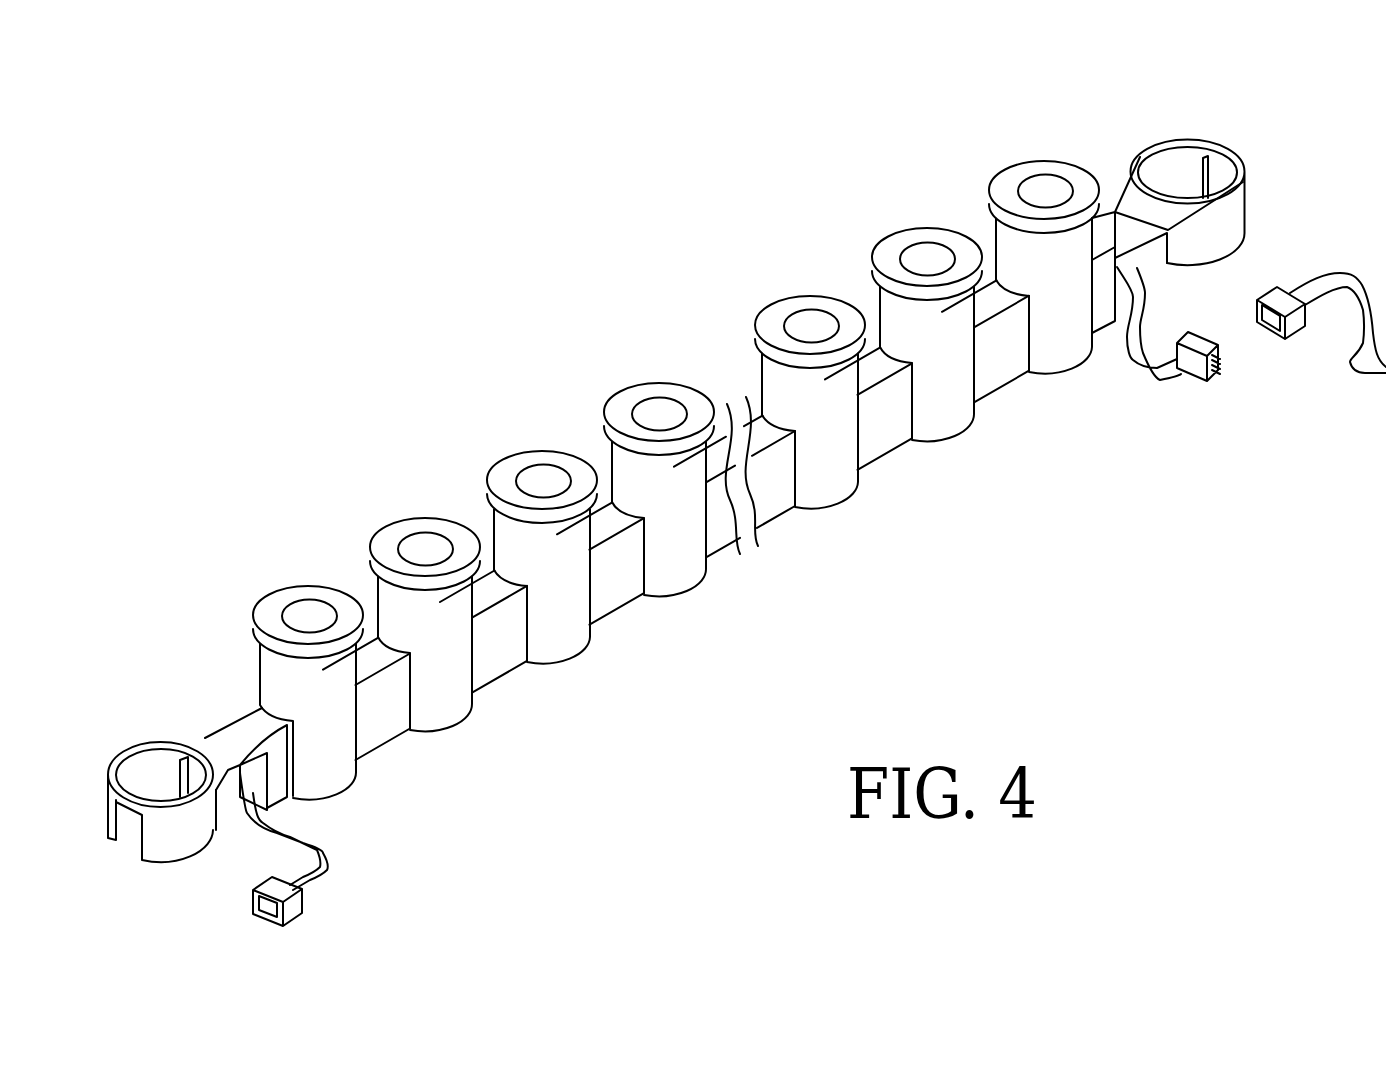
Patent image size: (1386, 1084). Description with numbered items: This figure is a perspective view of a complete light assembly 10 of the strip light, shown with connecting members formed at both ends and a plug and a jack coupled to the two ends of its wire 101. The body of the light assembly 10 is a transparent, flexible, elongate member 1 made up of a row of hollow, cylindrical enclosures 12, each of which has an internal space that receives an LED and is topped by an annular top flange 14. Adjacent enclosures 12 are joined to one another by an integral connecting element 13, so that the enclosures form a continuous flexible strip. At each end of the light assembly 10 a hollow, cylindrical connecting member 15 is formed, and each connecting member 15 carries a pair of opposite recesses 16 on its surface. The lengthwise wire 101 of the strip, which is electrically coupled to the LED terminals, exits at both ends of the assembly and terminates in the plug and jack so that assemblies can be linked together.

The elongate member 1 is at (556, 447).
The light assembly 10 is at (709, 496).
The enclosure 12 is at (445, 713).
The connecting element 13 is at (485, 608).
The annular top flange 14 is at (290, 598).
The connecting member 15 is at (1150, 152).
The recess 16 is at (1220, 177).
The wire 101 is at (1200, 369).